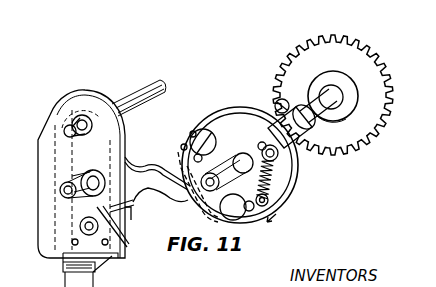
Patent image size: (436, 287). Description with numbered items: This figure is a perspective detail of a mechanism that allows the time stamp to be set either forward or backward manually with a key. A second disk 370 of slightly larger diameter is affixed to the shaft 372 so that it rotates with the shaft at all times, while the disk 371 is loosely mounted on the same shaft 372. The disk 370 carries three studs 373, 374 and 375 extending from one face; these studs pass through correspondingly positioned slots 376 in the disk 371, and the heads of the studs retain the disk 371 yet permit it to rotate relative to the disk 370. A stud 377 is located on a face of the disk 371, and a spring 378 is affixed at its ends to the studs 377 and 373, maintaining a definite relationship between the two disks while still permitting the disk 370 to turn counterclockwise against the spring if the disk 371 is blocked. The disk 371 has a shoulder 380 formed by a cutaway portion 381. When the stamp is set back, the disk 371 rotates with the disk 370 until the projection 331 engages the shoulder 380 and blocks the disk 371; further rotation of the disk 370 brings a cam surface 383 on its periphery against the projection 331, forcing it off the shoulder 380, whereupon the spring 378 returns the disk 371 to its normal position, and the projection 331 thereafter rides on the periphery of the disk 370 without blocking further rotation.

The projection 331 is at (185, 199).
The second disk 370 is at (298, 164).
The disk 371 is at (296, 178).
The shaft 372 is at (325, 126).
The stud 373 is at (262, 152).
The stud 374 is at (233, 221).
The stud 375 is at (191, 132).
The slots 376 is at (206, 130).
The stud 377 is at (276, 196).
The spring 378 is at (300, 199).
The shoulder 380 is at (166, 167).
The cutaway portion 381 is at (190, 208).
The cam surface 383 is at (182, 146).